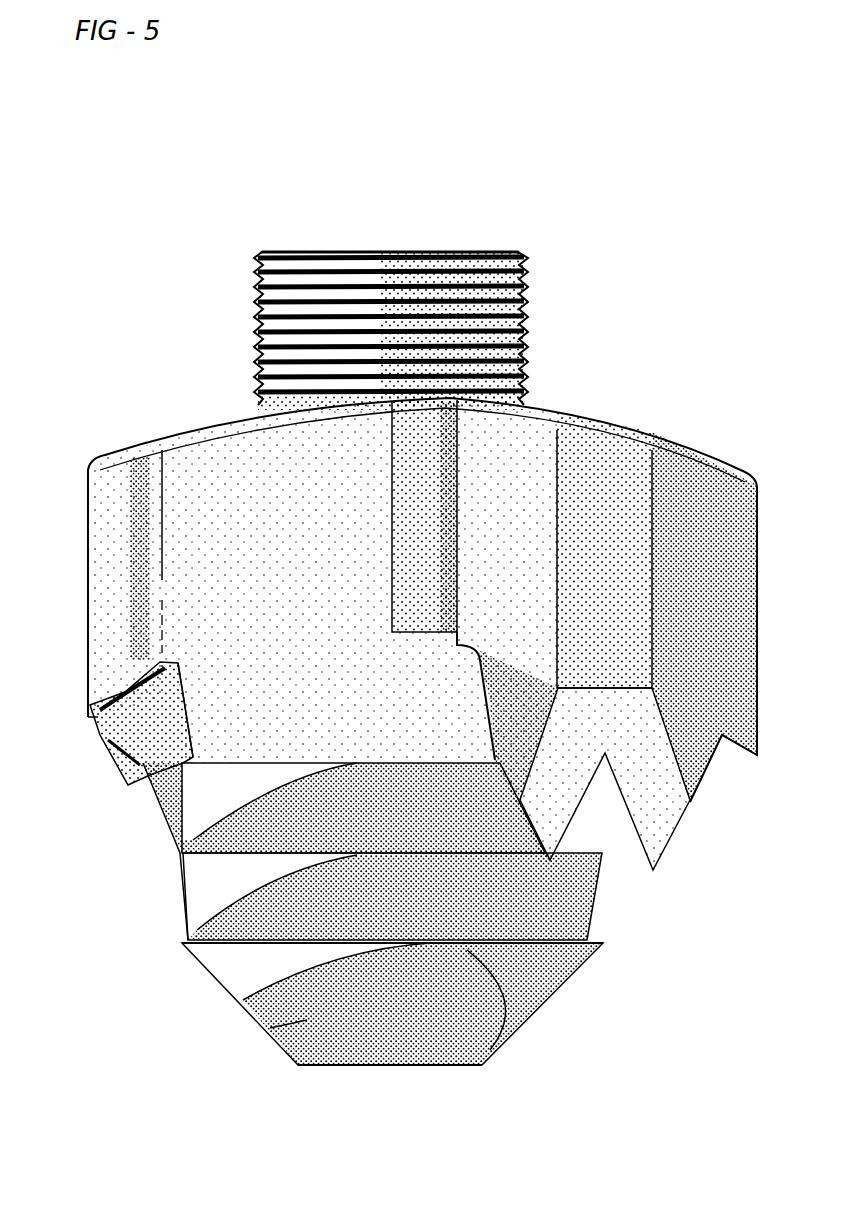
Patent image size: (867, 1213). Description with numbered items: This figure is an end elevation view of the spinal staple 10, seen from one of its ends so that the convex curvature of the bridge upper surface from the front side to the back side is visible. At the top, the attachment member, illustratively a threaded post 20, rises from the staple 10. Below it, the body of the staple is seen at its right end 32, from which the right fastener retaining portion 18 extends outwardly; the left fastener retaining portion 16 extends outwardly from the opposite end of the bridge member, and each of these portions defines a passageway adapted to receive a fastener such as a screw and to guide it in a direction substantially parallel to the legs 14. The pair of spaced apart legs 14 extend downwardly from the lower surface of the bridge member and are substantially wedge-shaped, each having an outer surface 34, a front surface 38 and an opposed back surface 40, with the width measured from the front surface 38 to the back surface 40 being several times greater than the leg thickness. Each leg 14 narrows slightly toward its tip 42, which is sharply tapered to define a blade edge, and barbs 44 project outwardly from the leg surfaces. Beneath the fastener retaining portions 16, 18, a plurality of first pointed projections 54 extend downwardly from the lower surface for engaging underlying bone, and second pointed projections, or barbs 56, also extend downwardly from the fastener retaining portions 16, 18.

The spinal staple 10 is at (232, 215).
The legs 14 is at (533, 1015).
The left fastener retaining portion 16 is at (110, 567).
The right fastener retaining portion 18 is at (594, 455).
The threaded post 20 is at (438, 262).
The right end 32 is at (200, 455).
The outer surface 34 is at (307, 1022).
The front surface 38 is at (186, 892).
The back surface 40 is at (600, 890).
The tips 42 is at (500, 1050).
The barbs 44 is at (205, 957).
The first pointed projections 54 is at (120, 746).
The barbs 56 is at (660, 822).